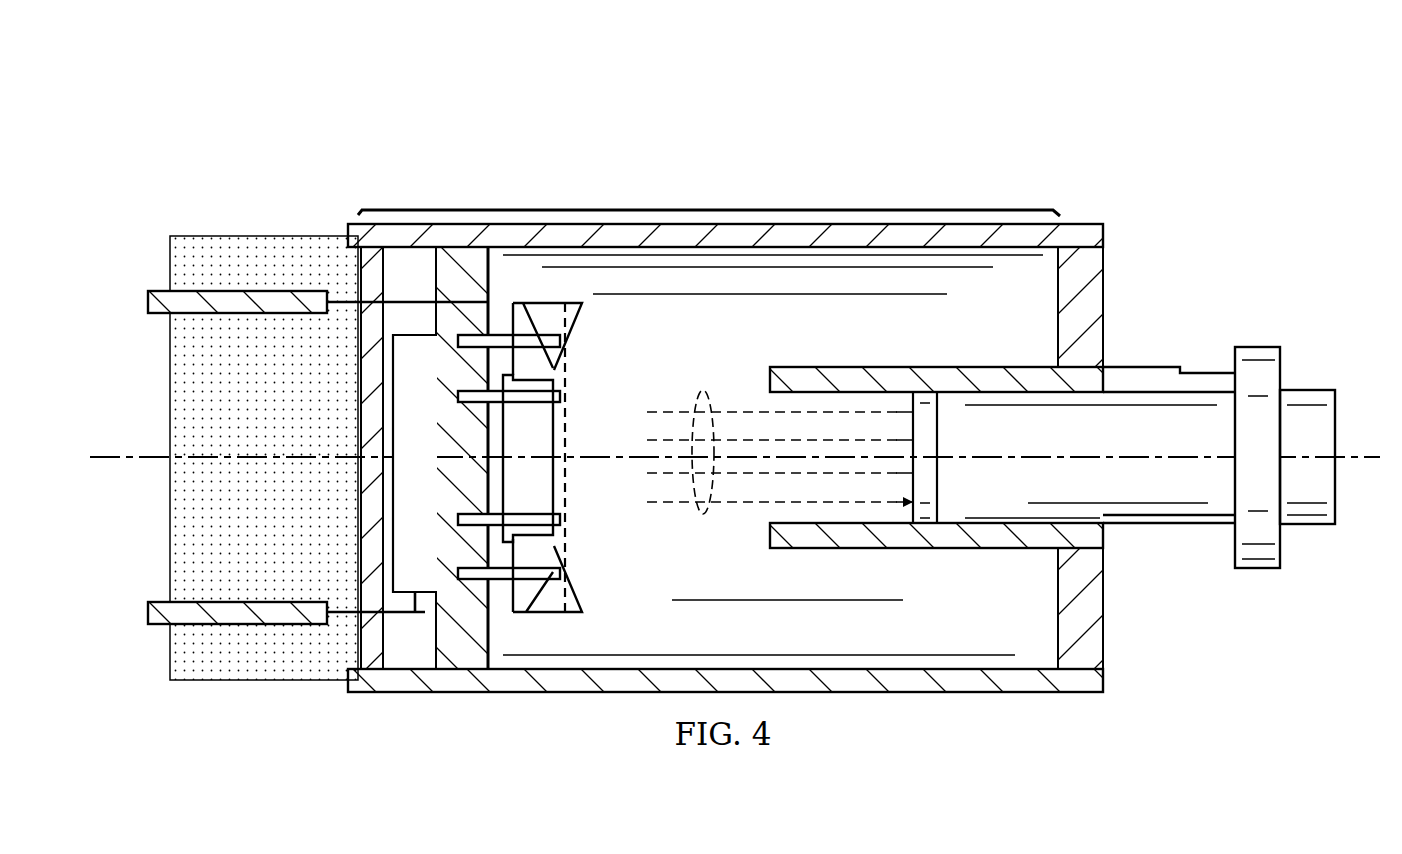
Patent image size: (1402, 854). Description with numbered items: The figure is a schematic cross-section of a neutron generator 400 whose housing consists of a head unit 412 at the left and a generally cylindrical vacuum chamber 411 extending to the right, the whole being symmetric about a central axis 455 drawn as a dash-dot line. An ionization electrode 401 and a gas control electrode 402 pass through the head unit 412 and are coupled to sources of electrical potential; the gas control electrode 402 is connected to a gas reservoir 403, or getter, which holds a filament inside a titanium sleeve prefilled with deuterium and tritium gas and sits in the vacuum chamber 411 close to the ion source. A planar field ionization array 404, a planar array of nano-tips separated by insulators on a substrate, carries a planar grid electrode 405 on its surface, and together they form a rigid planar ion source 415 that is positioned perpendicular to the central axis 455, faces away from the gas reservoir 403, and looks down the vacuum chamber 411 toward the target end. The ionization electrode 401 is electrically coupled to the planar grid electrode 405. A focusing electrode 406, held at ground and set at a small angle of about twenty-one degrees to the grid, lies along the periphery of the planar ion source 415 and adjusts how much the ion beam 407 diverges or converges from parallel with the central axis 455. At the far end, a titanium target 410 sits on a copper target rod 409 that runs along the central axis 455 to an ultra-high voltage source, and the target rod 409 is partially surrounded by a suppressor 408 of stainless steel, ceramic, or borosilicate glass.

The neutron generator 400 is at (302, 122).
The ionization electrode 401 is at (160, 290).
The gas control electrode 402 is at (160, 626).
The gas reservoir 403 is at (392, 425).
The planar field ionization array 404 is at (548, 428).
The planar grid electrode 405 is at (568, 487).
The focusing electrode 406 is at (572, 330).
The ion beam 407 is at (701, 518).
The suppressor 408 is at (955, 366).
The target rod 409 is at (1168, 524).
The target 410 is at (938, 514).
The vacuum chamber 411 is at (700, 212).
The head unit 412 is at (262, 236).
The planar ion source 415 is at (646, 362).
The central axis 455 is at (135, 455).